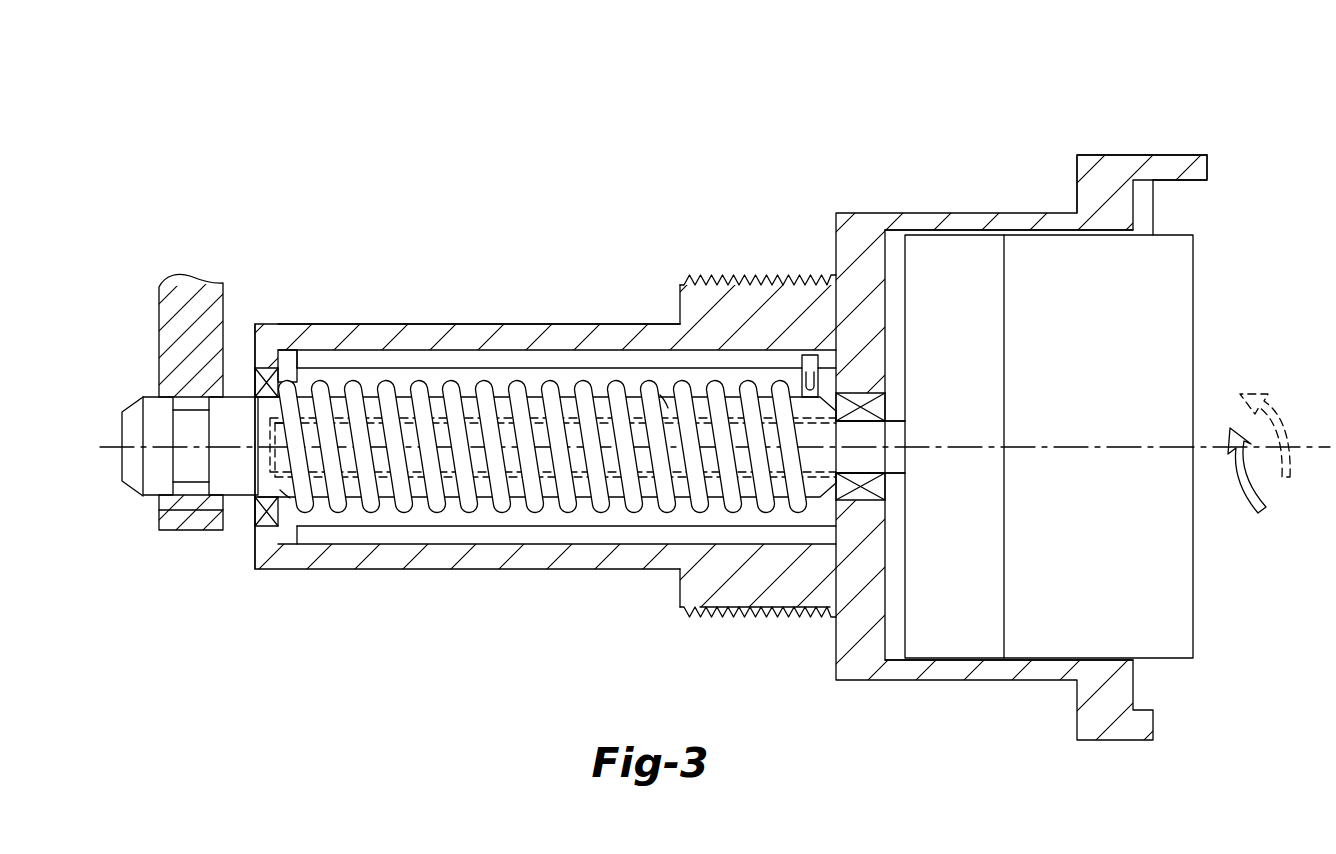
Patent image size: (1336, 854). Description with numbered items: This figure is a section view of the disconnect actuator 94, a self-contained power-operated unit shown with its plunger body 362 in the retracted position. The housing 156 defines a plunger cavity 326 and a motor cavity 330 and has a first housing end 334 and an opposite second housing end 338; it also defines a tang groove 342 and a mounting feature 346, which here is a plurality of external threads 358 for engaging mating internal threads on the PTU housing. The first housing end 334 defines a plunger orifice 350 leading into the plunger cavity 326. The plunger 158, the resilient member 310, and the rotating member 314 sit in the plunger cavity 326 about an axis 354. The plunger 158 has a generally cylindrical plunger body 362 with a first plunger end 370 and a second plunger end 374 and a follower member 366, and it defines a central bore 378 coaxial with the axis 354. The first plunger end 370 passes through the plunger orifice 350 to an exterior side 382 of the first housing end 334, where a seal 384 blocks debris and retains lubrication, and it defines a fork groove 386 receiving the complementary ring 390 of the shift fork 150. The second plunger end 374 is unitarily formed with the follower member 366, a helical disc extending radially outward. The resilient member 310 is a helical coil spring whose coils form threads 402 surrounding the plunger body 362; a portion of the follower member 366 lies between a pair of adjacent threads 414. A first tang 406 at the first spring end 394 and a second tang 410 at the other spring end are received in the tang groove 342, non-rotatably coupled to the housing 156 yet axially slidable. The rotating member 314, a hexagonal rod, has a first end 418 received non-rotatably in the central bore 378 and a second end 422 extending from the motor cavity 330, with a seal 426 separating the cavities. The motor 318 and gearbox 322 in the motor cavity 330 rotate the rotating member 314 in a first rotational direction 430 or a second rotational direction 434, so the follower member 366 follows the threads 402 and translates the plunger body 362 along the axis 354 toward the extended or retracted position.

The disconnect actuator 94 is at (283, 214).
The shift fork 150 is at (160, 296).
The housing 156 is at (1097, 151).
The plunger 158 is at (118, 462).
The resilient member 310 is at (410, 385).
The rotating member 314 is at (872, 420).
The motor 318 is at (1170, 316).
The gearbox 322 is at (958, 267).
The plunger cavity 326 is at (449, 520).
The motor cavity 330 is at (877, 275).
The first housing end 334 is at (268, 571).
The second housing end 338 is at (1208, 160).
The tang groove 342 is at (442, 355).
The mounting feature 346 is at (803, 596).
The plunger orifice 350 is at (266, 365).
The axis 354 is at (106, 430).
The external threads 358 is at (715, 613).
The plunger body 362 is at (500, 395).
The follower member 366 is at (668, 405).
The first plunger end 370 is at (134, 405).
The second plunger end 374 is at (866, 500).
The central bore 378 is at (568, 420).
The exterior side 382 is at (252, 531).
The seal 384 is at (244, 398).
The fork groove 386 is at (158, 468).
The complementary ring 390 is at (172, 522).
The first spring end 394 is at (284, 493).
The threads 402 is at (540, 546).
The first tang 406 is at (288, 357).
The second tang 410 is at (806, 354).
The pair of adjacent threads 414 is at (700, 520).
The first end 418 is at (708, 430).
The second end 422 is at (888, 456).
The seal 426 is at (860, 392).
The first rotational direction 430 is at (1243, 507).
The second rotational direction 434 is at (1293, 405).